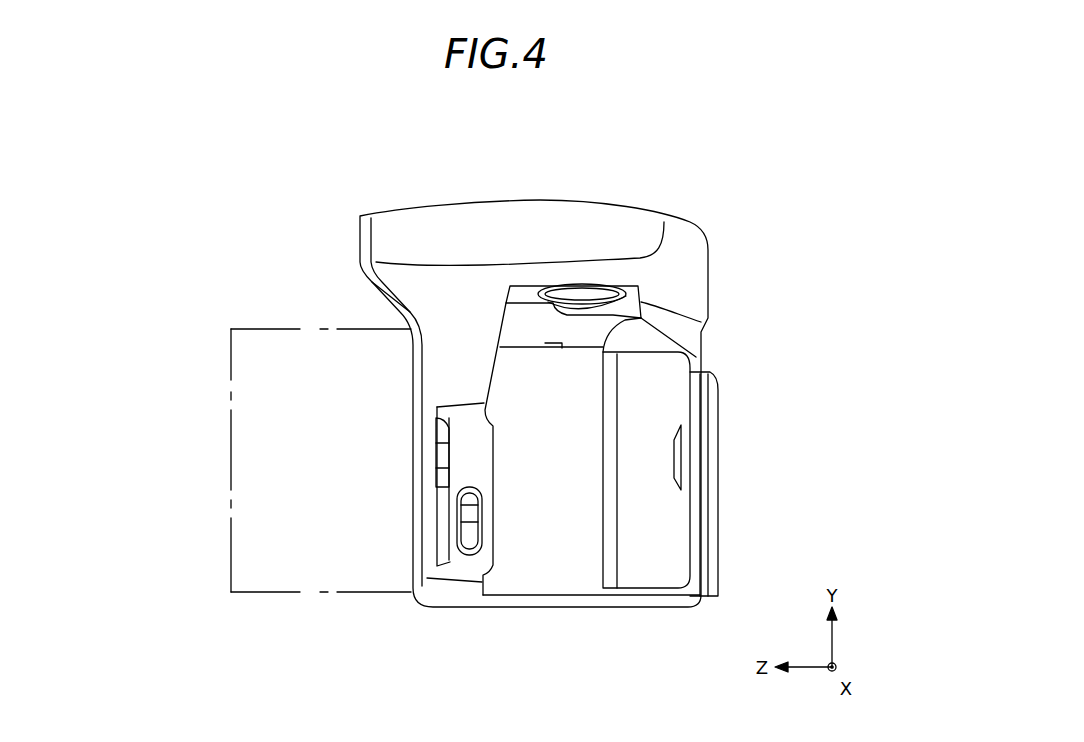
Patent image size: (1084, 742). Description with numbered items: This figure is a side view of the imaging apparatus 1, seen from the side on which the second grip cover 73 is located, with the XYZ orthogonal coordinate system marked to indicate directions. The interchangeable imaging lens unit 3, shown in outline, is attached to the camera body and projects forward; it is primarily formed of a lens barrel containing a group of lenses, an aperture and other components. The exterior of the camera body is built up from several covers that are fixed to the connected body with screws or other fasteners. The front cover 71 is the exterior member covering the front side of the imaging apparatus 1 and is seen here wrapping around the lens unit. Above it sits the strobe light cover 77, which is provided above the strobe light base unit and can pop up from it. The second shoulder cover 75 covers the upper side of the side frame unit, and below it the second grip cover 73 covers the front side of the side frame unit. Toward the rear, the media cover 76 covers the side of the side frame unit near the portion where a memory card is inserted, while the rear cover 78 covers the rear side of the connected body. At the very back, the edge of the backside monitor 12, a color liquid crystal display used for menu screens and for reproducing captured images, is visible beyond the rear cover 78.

The imaging apparatus 1 is at (797, 152).
The imaging lens unit 3 is at (231, 457).
The backside monitor 12 is at (718, 500).
The front cover 71 is at (440, 297).
The second grip cover 73 is at (527, 572).
The second shoulder cover 75 is at (525, 292).
The media cover 76 is at (648, 572).
The strobe light cover 77 is at (468, 222).
The rear cover 78 is at (693, 335).